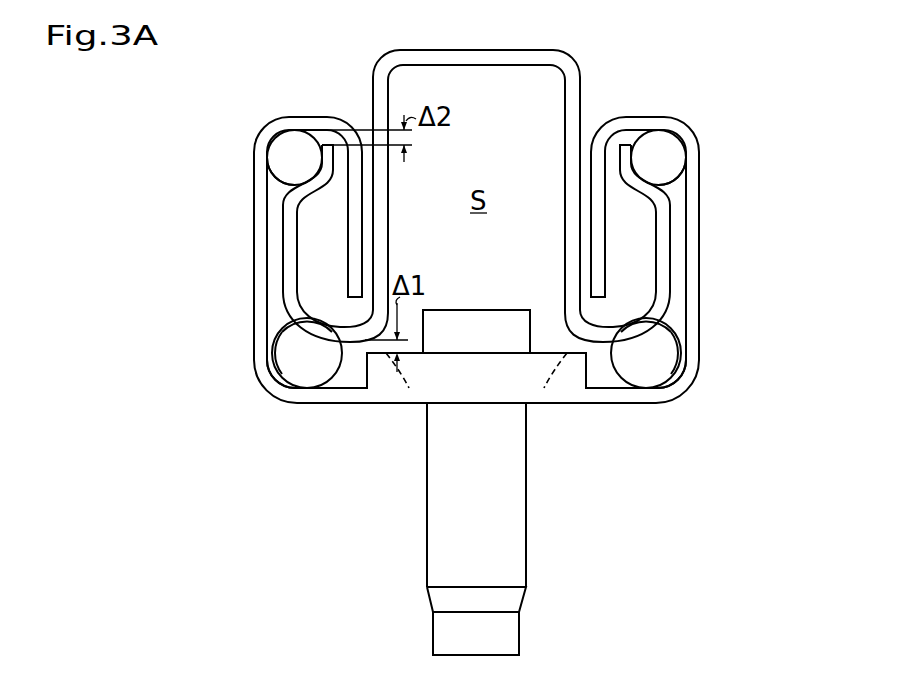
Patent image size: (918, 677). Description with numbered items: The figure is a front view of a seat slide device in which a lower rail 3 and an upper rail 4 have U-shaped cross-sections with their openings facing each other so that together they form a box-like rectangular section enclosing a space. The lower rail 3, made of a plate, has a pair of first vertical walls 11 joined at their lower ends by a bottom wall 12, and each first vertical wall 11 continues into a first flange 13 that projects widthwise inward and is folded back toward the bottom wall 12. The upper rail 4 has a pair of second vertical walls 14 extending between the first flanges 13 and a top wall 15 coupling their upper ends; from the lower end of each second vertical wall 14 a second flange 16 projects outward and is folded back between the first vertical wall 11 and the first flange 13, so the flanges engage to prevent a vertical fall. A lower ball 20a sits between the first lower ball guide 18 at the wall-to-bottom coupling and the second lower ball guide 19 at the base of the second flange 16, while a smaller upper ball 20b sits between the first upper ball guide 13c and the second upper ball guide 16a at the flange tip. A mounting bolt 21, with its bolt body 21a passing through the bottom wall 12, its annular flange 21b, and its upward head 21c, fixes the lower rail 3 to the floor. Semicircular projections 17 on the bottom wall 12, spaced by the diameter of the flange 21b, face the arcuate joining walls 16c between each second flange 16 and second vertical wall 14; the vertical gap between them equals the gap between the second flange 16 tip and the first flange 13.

The lower rail 3 is at (548, 404).
The upper rail 4 is at (477, 50).
The first vertical wall 11 is at (254, 294).
The bottom wall 12 is at (408, 404).
The first flange 13 is at (365, 180).
The first upper ball guide 13c is at (278, 152).
The second vertical wall 14 is at (372, 100).
The top wall 15 is at (513, 50).
The second flange 16 is at (283, 263).
The second upper ball guide 16a is at (318, 157).
The joining wall 16c is at (362, 322).
The projection 17 is at (327, 368).
The first lower ball guide 18 is at (284, 368).
The second lower ball guide 19 is at (290, 321).
The lower ball 20a is at (274, 341).
The upper ball 20b is at (277, 188).
The mounting bolt 21 is at (521, 548).
The bolt body 21a is at (521, 500).
The flange 21b is at (545, 352).
The head 21c is at (474, 310).